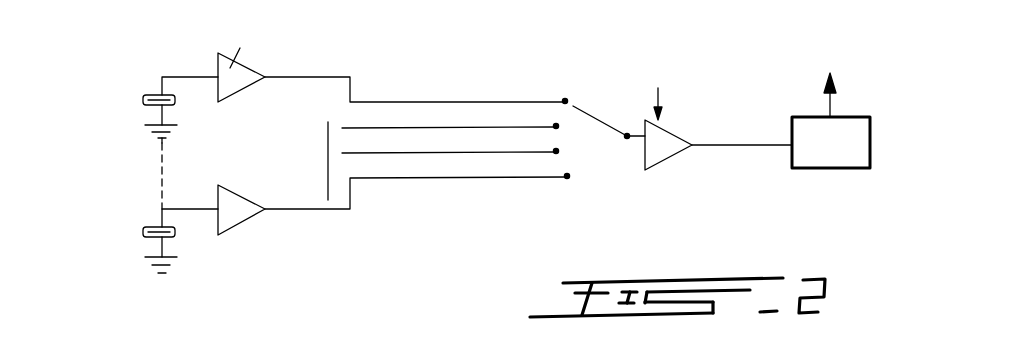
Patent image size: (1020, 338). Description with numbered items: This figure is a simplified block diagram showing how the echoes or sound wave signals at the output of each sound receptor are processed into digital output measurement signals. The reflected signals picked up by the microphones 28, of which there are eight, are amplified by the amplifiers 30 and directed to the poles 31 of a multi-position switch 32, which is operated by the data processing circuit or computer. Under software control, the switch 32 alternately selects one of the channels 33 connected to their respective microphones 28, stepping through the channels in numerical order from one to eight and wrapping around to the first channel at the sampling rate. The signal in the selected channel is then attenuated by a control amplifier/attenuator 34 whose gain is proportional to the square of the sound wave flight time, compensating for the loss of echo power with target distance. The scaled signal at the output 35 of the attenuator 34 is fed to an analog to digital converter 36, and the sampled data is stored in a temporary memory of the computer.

The microphone 28 is at (153, 95).
The amplifier 30 is at (240, 78).
The pole 31 is at (565, 101).
The multi-position switch 32 is at (607, 120).
The channel 33 is at (415, 152).
The control amplifier/attenuator 34 is at (670, 137).
The output 35 is at (760, 142).
The analog to digital converter 36 is at (842, 168).